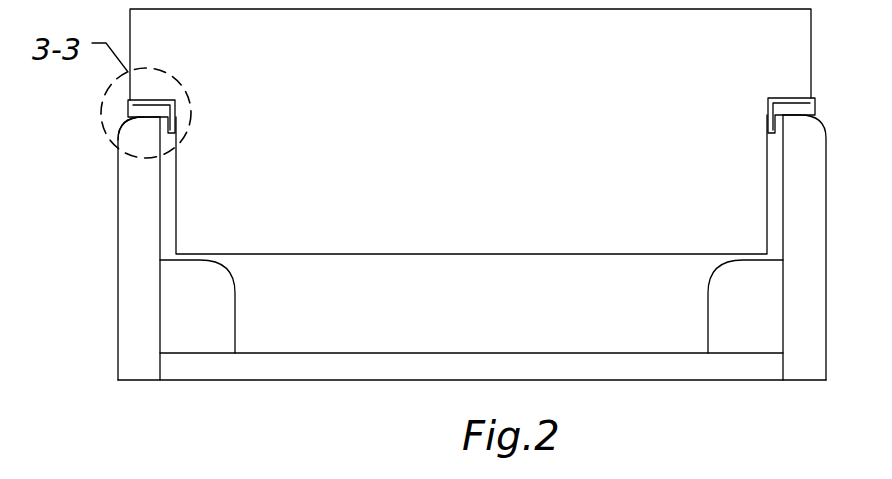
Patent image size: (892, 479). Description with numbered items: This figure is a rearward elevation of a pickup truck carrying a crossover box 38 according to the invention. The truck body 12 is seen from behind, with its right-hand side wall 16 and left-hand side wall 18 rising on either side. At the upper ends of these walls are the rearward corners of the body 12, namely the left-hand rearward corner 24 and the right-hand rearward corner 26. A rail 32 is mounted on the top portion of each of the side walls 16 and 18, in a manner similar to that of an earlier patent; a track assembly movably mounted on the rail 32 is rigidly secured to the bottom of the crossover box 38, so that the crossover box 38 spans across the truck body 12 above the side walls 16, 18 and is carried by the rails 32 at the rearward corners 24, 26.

The truck body 12 is at (118, 205).
The right-hand side wall 16 is at (783, 230).
The left-hand side wall 18 is at (160, 237).
The left-hand rearward corner 24 is at (120, 127).
The right-hand rearward corner 26 is at (826, 124).
The rail 32 is at (128, 104).
The crossover box 38 is at (469, 121).